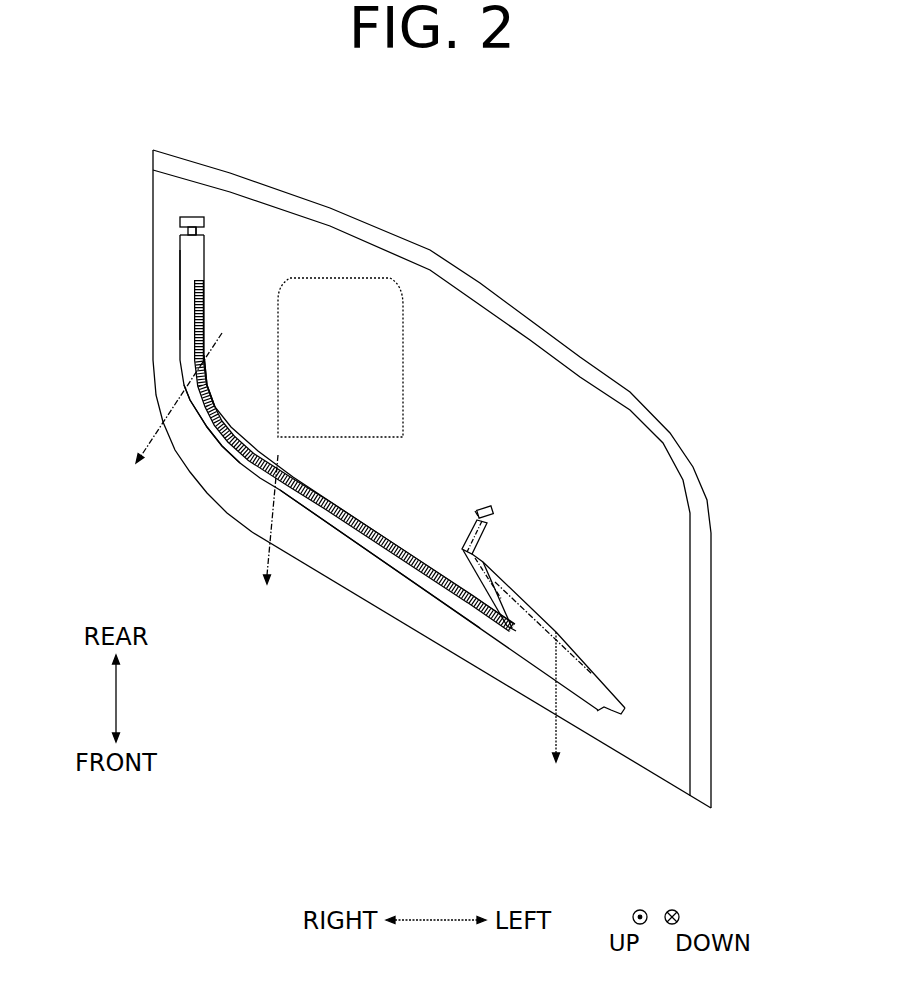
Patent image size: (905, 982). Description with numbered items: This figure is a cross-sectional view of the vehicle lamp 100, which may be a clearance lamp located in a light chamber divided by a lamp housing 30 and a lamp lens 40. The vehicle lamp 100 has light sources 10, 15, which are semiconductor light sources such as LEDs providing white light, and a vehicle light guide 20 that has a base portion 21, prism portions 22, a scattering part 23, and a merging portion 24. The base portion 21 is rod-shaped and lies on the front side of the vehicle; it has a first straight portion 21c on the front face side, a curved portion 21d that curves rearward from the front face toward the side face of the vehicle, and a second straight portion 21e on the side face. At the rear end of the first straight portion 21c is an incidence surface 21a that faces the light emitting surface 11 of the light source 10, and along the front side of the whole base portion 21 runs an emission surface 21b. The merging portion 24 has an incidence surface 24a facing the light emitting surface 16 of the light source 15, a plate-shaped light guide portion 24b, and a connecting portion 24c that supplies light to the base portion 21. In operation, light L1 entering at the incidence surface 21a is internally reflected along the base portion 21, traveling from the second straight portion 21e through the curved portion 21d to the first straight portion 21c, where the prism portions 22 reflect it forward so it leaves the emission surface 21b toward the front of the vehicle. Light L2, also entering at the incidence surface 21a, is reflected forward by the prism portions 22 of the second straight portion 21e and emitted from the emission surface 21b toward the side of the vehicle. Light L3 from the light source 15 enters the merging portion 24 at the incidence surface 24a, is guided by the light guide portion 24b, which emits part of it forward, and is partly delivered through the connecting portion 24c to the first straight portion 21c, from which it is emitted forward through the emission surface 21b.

The light source 10 is at (193, 207).
The light emitting surface 11 is at (204, 230).
The light source 15 is at (497, 492).
The light emitting surface 16 is at (478, 515).
The vehicle light guide 20 is at (155, 343).
The base portion 21 is at (383, 556).
The incidence surface 21a is at (179, 224).
The emission surface 21b is at (316, 521).
The first straight portion 21c is at (416, 602).
The curved portion 21d is at (200, 444).
The second straight portion 21e is at (170, 265).
The prism portions 22 is at (447, 598).
The scattering part 23 is at (214, 360).
The merging portion 24 is at (512, 558).
The incidence surface 24a is at (492, 512).
The light guide portion 24b is at (512, 597).
The connecting portion 24c is at (570, 663).
The lamp housing 30 is at (452, 275).
The lamp lens 40 is at (591, 745).
The vehicle lamp 100 is at (398, 485).
The light L1 is at (268, 572).
The light L2 is at (156, 432).
The light L3 is at (545, 745).